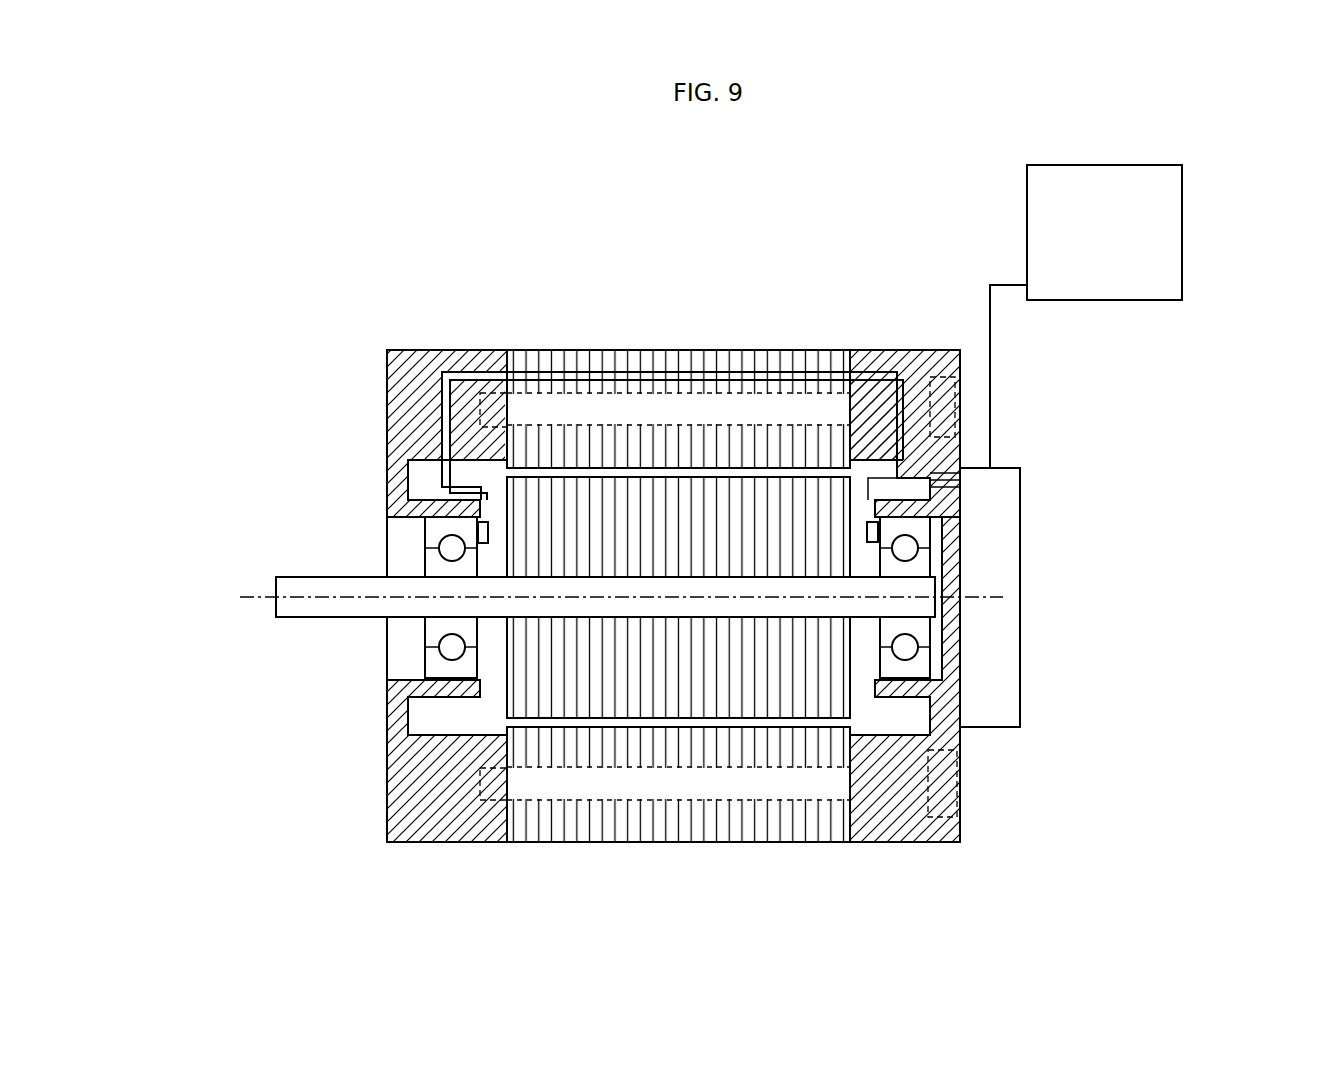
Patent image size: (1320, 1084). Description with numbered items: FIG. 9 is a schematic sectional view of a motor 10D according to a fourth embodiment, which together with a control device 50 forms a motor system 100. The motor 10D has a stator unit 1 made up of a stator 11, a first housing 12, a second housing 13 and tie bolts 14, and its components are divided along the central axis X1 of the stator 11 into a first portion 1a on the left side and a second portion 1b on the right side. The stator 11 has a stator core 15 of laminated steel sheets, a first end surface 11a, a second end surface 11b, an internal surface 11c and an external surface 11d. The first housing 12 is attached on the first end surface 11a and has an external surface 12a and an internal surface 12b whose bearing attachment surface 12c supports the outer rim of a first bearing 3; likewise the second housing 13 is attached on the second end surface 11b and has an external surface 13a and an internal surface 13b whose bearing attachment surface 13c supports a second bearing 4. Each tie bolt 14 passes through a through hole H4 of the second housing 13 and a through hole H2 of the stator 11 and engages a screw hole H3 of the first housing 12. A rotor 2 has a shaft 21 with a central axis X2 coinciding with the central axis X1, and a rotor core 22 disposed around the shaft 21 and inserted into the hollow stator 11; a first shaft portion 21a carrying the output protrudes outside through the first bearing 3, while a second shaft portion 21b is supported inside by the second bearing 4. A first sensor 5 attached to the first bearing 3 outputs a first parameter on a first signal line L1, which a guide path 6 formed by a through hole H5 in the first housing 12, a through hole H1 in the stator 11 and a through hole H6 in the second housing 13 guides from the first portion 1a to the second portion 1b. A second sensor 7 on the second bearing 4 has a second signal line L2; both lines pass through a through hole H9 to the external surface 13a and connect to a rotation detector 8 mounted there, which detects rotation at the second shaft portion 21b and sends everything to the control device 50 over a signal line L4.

The motor system 100 is at (307, 213).
The motor 10D is at (323, 300).
The stator unit 1 is at (595, 183).
The first portion 1a is at (528, 253).
The second portion 1b is at (773, 257).
The stator 11 is at (677, 277).
The first end surface 11a is at (500, 363).
The second end surface 11b is at (868, 360).
The internal surface 11c is at (680, 470).
The external surface 11d is at (745, 360).
The stator core 15 is at (653, 357).
The guide path 6 is at (825, 365).
The through hole H1 is at (723, 362).
The through hole H2 is at (560, 800).
The screw hole H3 is at (490, 800).
The through hole H4 is at (892, 800).
The through hole H5 is at (445, 387).
The through hole H6 is at (940, 395).
The through hole H9 is at (958, 470).
The first housing 12 is at (403, 392).
The external surface 12a is at (405, 843).
The internal surface 12b is at (445, 725).
The bearing attachment surface 12c is at (395, 676).
The second housing 13 is at (948, 370).
The external surface 13a is at (927, 843).
The internal surface 13b is at (900, 725).
The bearing attachment surface 13c is at (945, 660).
The tie bolt 14 is at (957, 785).
The rotor 2 is at (195, 590).
The shaft 21 is at (285, 606).
The first shaft portion 21a is at (298, 583).
The second shaft portion 21b is at (918, 588).
The rotor core 22 is at (550, 673).
The first bearing 3 is at (427, 518).
The second bearing 4 is at (957, 525).
The first sensor 5 is at (477, 525).
The second sensor 7 is at (907, 522).
The rotation detector 8 is at (1000, 622).
The first signal line L1 is at (430, 472).
The second signal line L2 is at (960, 495).
The signal line L4 is at (1003, 283).
The control device 50 is at (1185, 228).
The central axis X1 is at (725, 753).
The central axis X2 is at (668, 600).